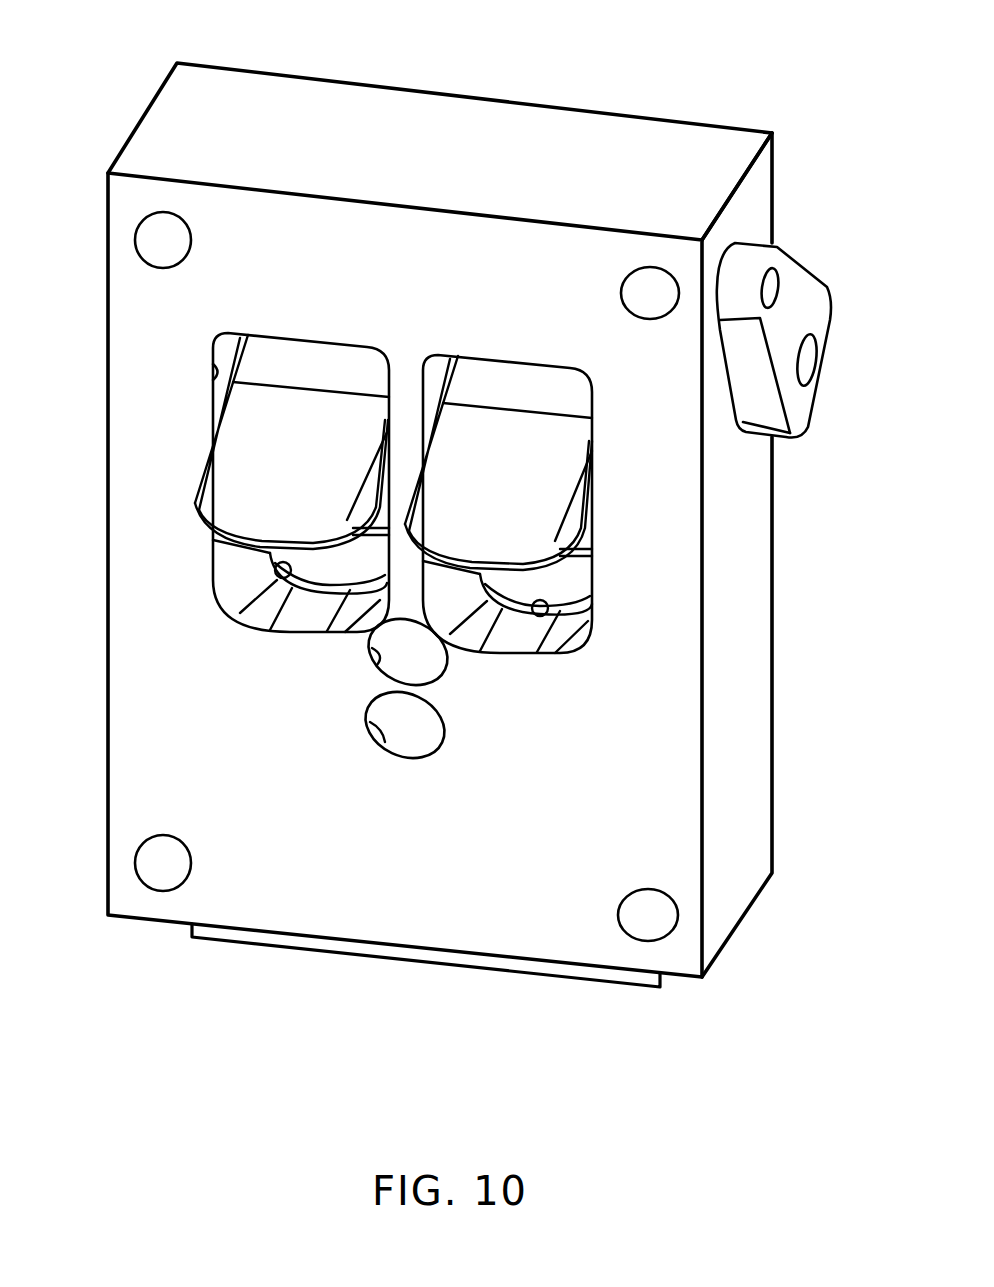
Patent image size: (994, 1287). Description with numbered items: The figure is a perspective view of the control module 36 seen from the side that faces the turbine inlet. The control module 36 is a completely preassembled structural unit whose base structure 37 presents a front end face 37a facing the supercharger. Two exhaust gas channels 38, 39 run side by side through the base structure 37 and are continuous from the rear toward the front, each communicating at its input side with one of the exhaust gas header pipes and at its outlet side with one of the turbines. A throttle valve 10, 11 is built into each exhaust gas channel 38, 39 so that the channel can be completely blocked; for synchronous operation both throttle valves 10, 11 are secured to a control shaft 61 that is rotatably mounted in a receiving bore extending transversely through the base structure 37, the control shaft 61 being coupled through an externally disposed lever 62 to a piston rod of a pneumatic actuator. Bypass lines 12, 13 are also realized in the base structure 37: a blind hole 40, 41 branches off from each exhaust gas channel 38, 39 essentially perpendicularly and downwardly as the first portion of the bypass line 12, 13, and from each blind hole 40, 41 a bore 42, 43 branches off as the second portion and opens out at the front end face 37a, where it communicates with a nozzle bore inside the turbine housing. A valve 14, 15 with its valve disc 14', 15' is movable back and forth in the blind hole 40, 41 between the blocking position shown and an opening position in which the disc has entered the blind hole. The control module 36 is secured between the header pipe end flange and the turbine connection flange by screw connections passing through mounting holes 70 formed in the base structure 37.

The control module 36 is at (431, 157).
The base structure 37 is at (743, 722).
The front end face 37a is at (462, 903).
The exhaust gas channel 38 is at (213, 385).
The exhaust gas channel 39 is at (592, 546).
The throttle valve 10 is at (243, 481).
The throttle valve 11 is at (462, 481).
The bypass line 12 is at (430, 665).
The bypass line 13 is at (430, 728).
The valve 14 is at (300, 518).
The valve disc 14' is at (310, 624).
The valve 15 is at (507, 529).
The valve disc 15' is at (570, 645).
The blind hole 40 is at (285, 590).
The blind hole 41 is at (548, 596).
The bore 42 is at (377, 665).
The bore 43 is at (385, 748).
The control shaft 61 is at (810, 365).
The lever 62 is at (793, 300).
The mounting holes 70 is at (158, 237).